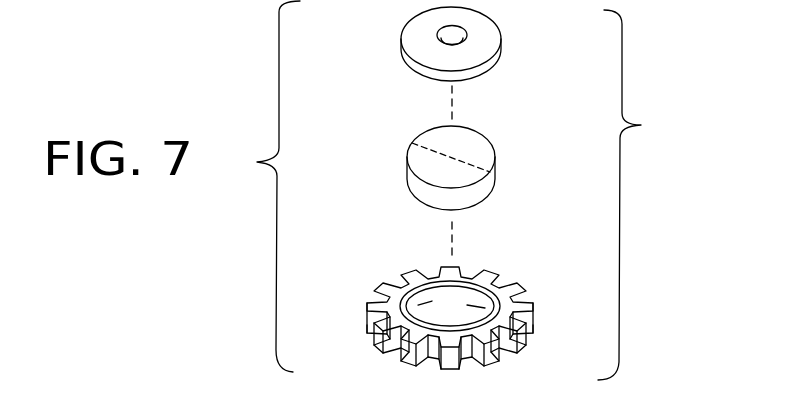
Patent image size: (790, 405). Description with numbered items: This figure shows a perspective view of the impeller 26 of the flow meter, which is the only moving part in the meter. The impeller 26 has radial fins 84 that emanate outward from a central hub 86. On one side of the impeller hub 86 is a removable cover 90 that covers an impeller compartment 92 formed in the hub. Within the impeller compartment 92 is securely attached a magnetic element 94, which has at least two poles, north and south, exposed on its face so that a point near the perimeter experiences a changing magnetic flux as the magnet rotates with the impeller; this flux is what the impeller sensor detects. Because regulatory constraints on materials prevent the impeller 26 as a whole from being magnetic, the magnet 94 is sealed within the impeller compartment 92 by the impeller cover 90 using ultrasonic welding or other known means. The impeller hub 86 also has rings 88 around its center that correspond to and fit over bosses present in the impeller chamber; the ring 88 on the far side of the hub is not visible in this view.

The impeller 26 is at (473, 190).
The radial fins 84 is at (411, 268).
The central hub 86 is at (522, 292).
The rings 88 is at (468, 36).
The removable cover 90 is at (497, 52).
The impeller compartment 92 is at (468, 314).
The magnetic element 94 is at (495, 177).